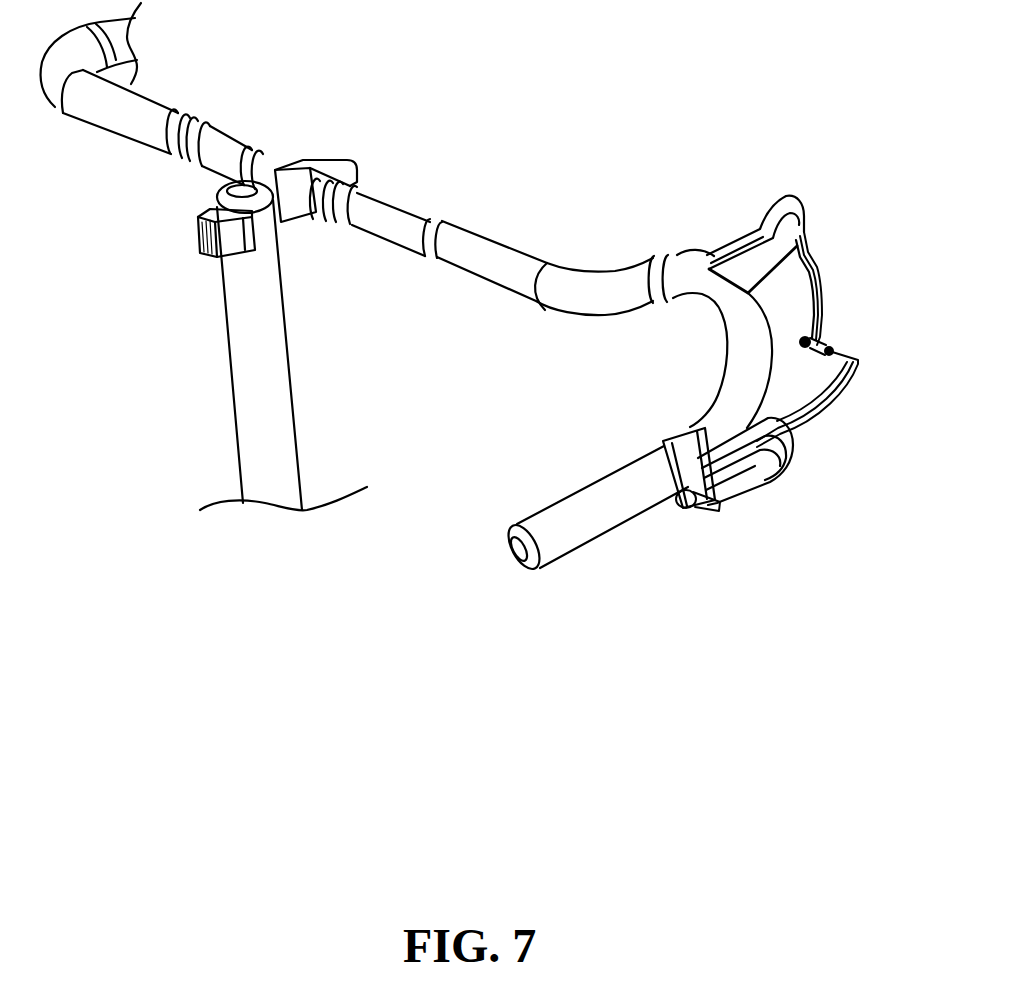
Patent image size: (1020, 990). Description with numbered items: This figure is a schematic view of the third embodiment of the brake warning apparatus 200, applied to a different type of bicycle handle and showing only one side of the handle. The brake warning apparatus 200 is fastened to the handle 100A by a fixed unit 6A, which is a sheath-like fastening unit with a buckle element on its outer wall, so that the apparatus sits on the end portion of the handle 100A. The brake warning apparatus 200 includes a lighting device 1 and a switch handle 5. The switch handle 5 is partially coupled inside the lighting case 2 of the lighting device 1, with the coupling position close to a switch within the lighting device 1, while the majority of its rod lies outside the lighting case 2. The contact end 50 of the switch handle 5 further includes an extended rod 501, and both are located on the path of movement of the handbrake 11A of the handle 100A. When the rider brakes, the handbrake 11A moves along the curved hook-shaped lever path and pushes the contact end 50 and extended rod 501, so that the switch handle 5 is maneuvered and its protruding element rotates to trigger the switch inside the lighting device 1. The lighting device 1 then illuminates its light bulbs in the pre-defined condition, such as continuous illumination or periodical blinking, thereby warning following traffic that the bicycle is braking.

The handle 100A is at (583, 507).
The handbrake 11A is at (807, 250).
The contact end 50 is at (838, 347).
The extended rod 501 is at (810, 346).
The switch handle 5 is at (830, 400).
The lighting device 1 is at (772, 501).
The fixed unit 6A is at (687, 440).
The lighting case 2 is at (680, 497).
The brake warning apparatus 200 is at (758, 425).